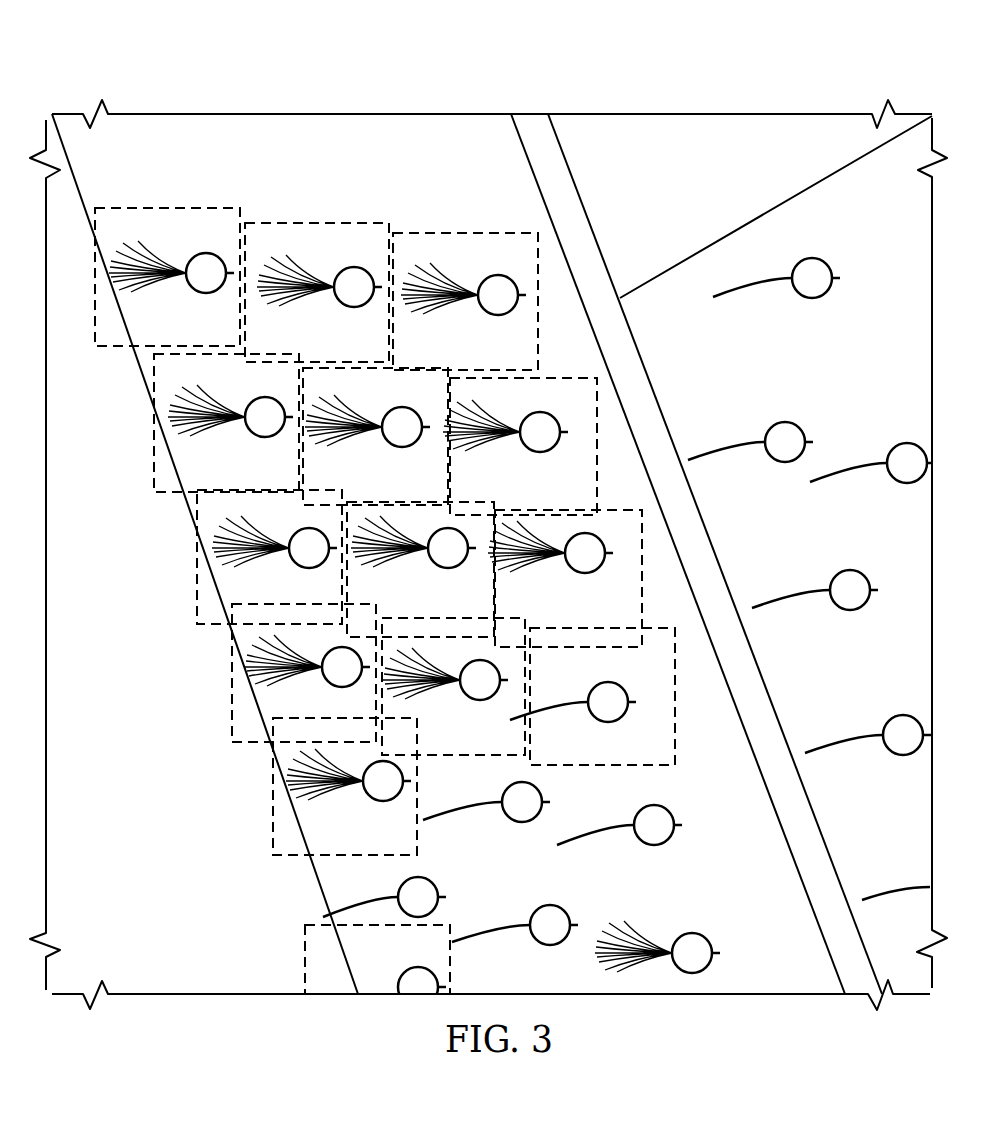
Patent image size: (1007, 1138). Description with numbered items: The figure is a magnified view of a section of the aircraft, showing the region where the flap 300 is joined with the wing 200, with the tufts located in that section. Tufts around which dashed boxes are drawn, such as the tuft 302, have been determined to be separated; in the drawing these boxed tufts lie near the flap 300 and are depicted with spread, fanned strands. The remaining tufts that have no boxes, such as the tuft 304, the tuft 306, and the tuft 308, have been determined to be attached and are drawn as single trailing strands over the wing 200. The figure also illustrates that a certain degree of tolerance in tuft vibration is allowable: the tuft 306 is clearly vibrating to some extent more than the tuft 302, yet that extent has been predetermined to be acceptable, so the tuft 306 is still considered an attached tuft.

The flap 300 is at (291, 76).
The wing 200 is at (678, 136).
The tuft 302 is at (437, 219).
The tuft 304 is at (508, 840).
The tuft 306 is at (680, 913).
The tuft 308 is at (683, 803).